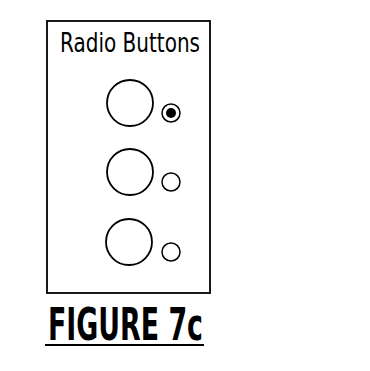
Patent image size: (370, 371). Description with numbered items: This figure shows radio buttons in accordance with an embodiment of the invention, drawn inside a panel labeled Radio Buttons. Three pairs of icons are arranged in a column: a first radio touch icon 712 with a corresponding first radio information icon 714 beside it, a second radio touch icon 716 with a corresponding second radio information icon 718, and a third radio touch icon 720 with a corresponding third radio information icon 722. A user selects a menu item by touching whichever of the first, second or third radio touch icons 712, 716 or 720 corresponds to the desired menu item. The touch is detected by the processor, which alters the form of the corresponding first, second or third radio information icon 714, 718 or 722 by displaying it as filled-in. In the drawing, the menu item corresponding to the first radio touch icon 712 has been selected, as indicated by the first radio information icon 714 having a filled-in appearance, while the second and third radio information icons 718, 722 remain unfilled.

The first radio touch icon 712 is at (145, 85).
The first radio information icon 714 is at (180, 112).
The second radio touch icon 716 is at (145, 155).
The second radio information icon 718 is at (180, 181).
The third radio touch icon 720 is at (144, 225).
The third radio information icon 722 is at (180, 251).